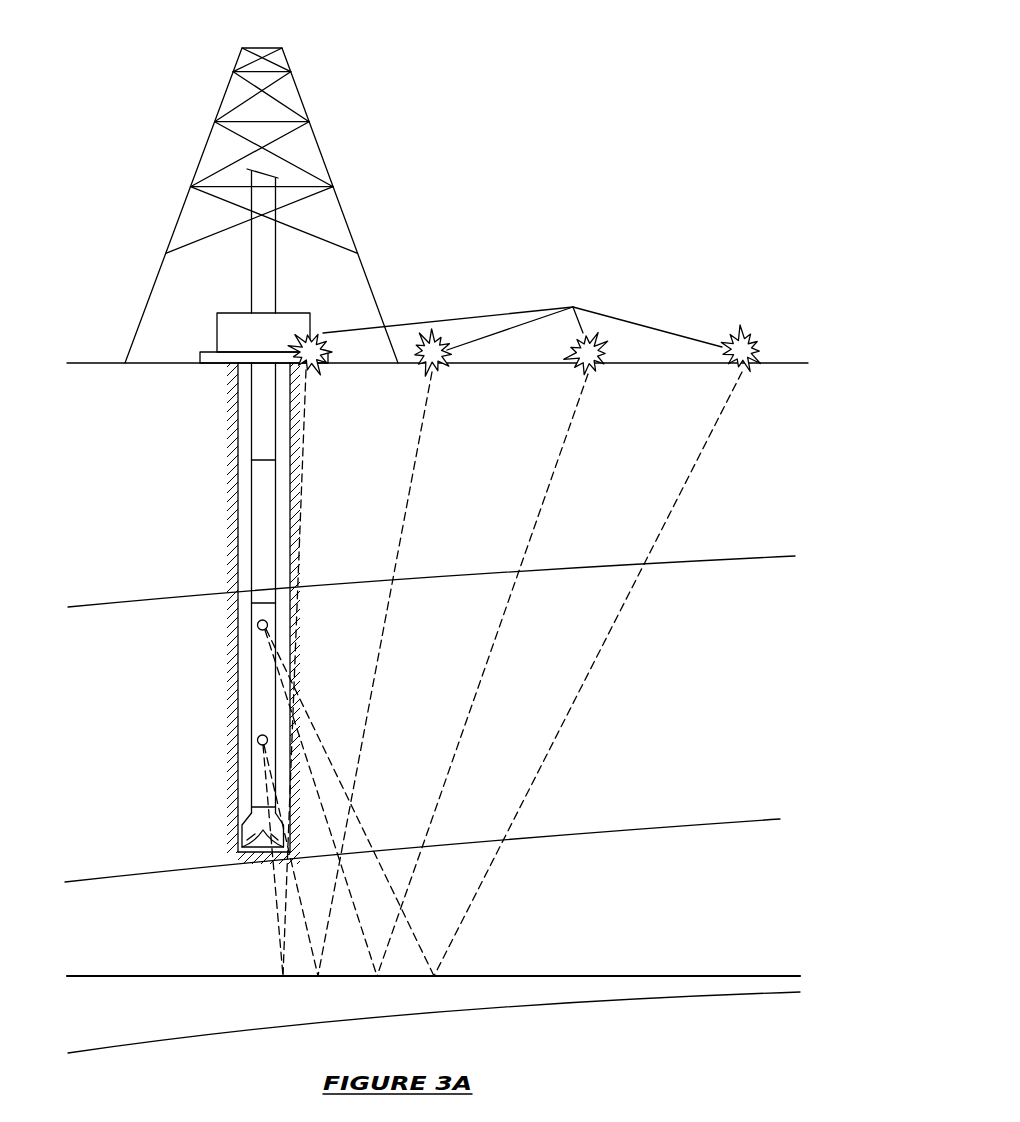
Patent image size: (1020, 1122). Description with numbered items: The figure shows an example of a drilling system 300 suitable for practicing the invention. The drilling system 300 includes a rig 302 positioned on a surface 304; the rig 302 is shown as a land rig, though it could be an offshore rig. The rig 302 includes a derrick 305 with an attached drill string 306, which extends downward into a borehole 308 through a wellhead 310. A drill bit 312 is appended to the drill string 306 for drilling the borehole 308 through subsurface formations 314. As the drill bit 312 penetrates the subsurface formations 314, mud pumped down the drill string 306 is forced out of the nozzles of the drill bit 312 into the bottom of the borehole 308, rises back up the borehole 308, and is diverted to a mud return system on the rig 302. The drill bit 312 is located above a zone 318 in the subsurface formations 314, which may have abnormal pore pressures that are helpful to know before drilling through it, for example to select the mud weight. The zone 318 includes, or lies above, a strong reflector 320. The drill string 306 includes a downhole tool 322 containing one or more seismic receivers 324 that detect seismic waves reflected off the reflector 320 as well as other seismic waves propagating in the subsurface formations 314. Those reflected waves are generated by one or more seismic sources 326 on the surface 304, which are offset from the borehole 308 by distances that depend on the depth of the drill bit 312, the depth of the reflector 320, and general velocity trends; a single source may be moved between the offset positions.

The drilling system 300 is at (400, 187).
The rig 302 is at (160, 242).
The surface 304 is at (100, 363).
The derrick 305 is at (208, 140).
The drill string 306 is at (276, 267).
The borehole 308 is at (238, 460).
The wellhead 310 is at (230, 312).
The drill bit 312 is at (251, 838).
The subsurface formations 314 is at (634, 502).
The zone 318 is at (656, 916).
The strong reflector 320 is at (130, 975).
The downhole tool 322 is at (252, 683).
The seismic receivers 324 is at (268, 624).
The seismic sources 326 is at (526, 629).